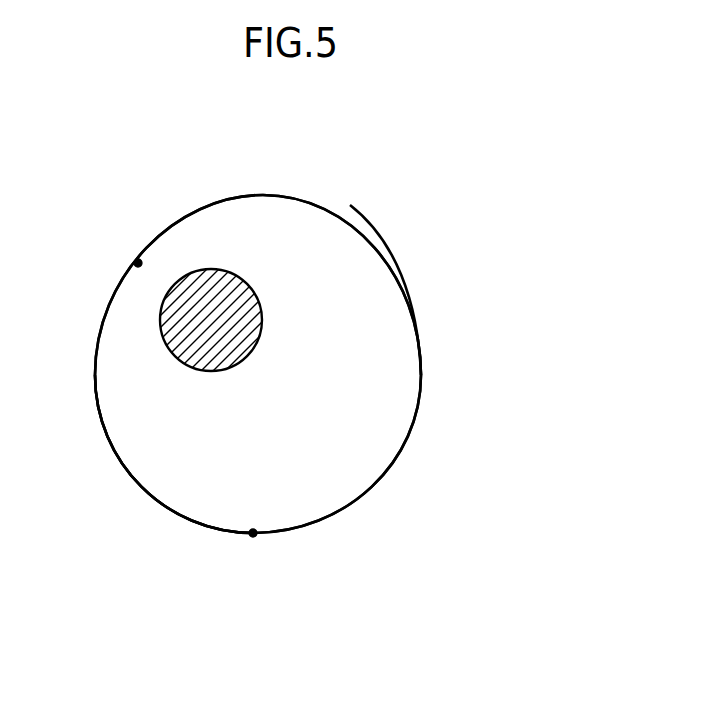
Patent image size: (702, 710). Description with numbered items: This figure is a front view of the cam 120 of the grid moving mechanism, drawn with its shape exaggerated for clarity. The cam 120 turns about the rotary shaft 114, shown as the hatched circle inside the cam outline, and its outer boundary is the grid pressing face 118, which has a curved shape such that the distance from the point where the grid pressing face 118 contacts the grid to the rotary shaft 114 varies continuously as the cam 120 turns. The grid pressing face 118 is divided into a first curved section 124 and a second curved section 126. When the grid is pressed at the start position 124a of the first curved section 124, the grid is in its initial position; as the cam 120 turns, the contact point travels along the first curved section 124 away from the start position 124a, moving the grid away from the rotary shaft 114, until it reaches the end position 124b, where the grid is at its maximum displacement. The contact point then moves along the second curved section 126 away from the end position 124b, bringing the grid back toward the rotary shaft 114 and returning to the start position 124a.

The cam 120 is at (461, 131).
The first curved section 124 is at (423, 348).
The grid pressing face 118 is at (403, 281).
The second curved section 126 is at (153, 505).
The start position 124a is at (138, 263).
The end position 124b is at (253, 533).
The rotary shaft 114 is at (243, 310).